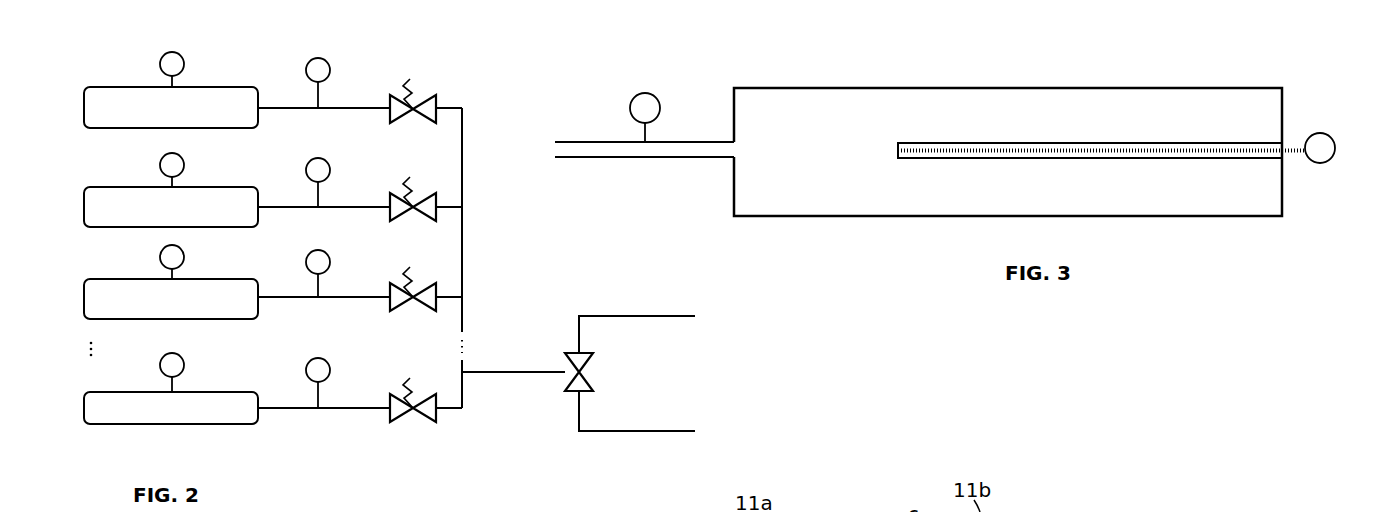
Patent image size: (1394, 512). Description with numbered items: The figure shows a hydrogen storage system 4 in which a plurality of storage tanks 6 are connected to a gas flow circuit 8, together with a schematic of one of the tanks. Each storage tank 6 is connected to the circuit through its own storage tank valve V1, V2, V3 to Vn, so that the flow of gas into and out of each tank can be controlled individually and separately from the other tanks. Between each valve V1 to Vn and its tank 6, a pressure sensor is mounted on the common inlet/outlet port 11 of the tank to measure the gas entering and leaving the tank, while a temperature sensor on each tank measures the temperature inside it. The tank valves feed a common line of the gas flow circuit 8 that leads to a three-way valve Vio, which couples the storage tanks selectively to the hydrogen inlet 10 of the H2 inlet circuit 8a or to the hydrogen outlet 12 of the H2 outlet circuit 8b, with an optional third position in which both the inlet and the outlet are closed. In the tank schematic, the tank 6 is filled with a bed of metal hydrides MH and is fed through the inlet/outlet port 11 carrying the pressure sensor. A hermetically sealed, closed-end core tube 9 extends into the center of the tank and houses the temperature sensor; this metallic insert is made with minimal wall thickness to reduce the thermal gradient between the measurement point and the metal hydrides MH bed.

In FIG. 2, the hydrogen storage system 4 is at (441, 25).
In FIG. 2, the storage tank 6 is at (212, 80).
In FIG. 3, the storage tank 6 is at (928, 68).
In FIG. 2, the gas flow circuit 8 is at (356, 427).
In FIG. 2, the H2 inlet circuit 8a is at (612, 442).
In FIG. 2, the H2 outlet circuit 8b is at (619, 279).
In FIG. 3, the core tube 9 is at (1108, 158).
In FIG. 2, the hydrogen inlet 10 is at (683, 429).
In FIG. 2, the inlet/outlet port 11 is at (286, 108).
In FIG. 3, the inlet/outlet port 11 is at (657, 150).
In FIG. 2, the hydrogen outlet 12 is at (683, 314).
In FIG. 2, the storage tank valve V1 is at (421, 98).
In FIG. 2, the storage tank valve V2 is at (421, 196).
In FIG. 2, the storage tank valve V3 is at (421, 286).
In FIG. 2, the storage tank valve Vn is at (419, 397).
In FIG. 2, the three-way valve Vio is at (600, 372).
In FIG. 3, the metal hydrides MH is at (848, 195).